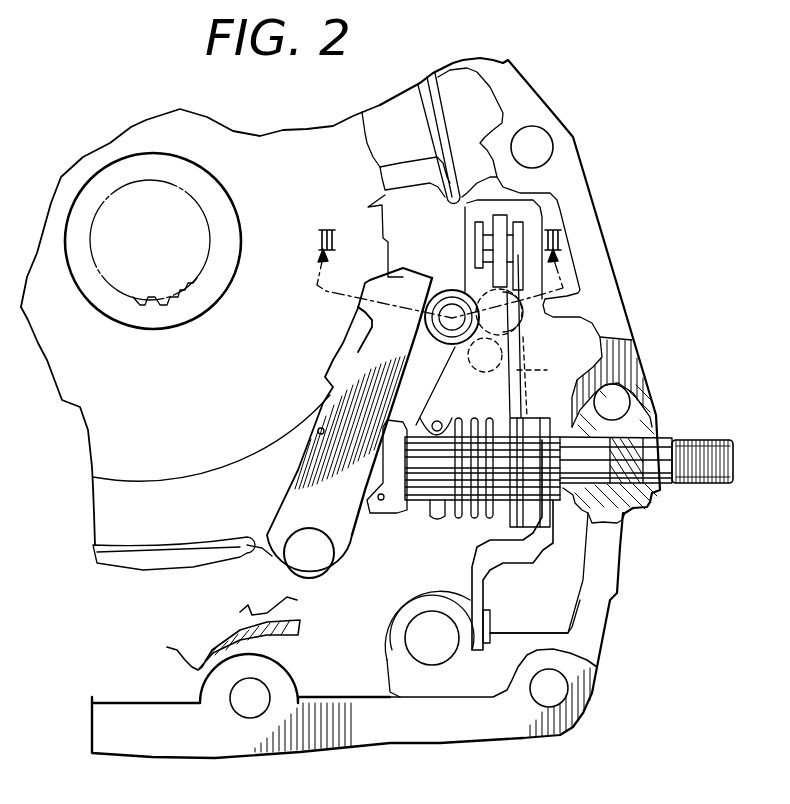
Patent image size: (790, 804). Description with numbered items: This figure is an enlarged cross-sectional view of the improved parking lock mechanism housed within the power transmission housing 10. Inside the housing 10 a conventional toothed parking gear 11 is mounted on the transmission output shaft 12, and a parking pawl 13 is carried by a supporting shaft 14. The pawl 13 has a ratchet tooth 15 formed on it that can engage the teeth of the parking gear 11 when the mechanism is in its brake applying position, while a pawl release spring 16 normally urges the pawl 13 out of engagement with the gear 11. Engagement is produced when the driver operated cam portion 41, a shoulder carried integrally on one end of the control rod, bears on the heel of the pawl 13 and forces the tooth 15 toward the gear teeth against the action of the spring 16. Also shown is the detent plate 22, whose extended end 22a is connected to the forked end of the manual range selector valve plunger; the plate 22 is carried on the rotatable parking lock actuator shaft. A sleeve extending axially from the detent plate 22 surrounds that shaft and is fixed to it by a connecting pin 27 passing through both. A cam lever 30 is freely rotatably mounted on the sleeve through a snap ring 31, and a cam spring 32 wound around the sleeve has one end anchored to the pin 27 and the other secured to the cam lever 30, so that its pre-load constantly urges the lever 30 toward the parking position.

The power transmission housing 10 is at (467, 733).
The toothed parking gear 11 is at (80, 408).
The transmission output shaft 12 is at (188, 205).
The parking pawl 13 is at (372, 370).
The supporting shaft 14 is at (295, 558).
The ratchet tooth 15 is at (356, 305).
The pawl release spring 16 is at (299, 600).
The detent plate 22 is at (560, 543).
The extended end of detent plate 22a is at (487, 643).
The connecting pin 27 is at (437, 517).
The cam lever 30 is at (522, 545).
The snap ring 31 is at (507, 518).
The cam spring 32 is at (484, 425).
The cam portion 41 is at (455, 290).